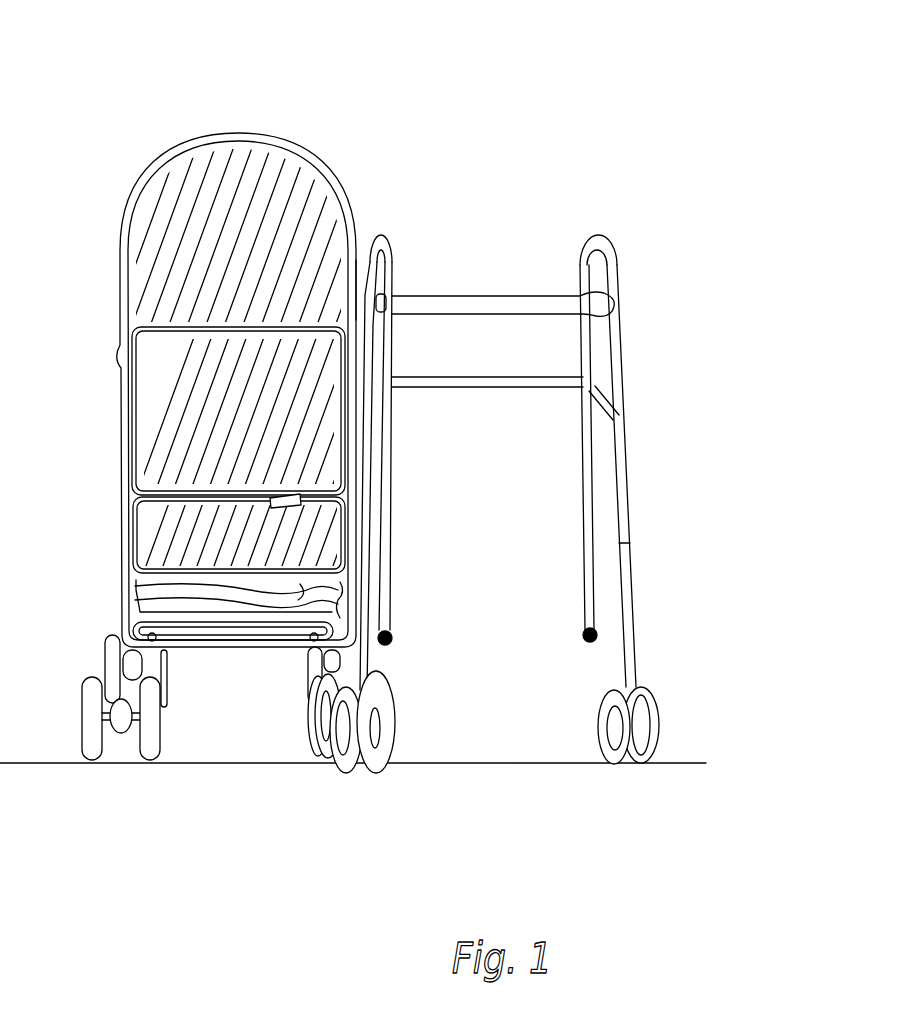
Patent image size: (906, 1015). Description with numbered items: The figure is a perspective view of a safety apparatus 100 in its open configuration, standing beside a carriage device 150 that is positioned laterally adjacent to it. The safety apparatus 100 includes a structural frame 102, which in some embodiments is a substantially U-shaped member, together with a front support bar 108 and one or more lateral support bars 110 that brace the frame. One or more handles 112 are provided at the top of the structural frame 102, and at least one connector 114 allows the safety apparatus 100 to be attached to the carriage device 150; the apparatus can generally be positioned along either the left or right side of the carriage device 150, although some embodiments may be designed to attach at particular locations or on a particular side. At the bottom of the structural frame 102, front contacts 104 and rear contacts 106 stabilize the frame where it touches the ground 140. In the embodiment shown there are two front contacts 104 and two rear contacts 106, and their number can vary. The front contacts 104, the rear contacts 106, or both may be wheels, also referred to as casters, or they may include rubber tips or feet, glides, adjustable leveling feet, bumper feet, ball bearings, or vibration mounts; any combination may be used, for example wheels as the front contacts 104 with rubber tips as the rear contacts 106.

The safety apparatus 100 is at (587, 403).
The structural frame 102 is at (639, 428).
The front contacts 104 is at (415, 766).
The rear contacts 106 is at (411, 635).
The front support bar 108 is at (548, 366).
The lateral support bars 110 is at (612, 387).
The handles 112 is at (600, 220).
The connector 114 is at (357, 272).
The ground 140 is at (30, 781).
The carriage device 150 is at (167, 199).